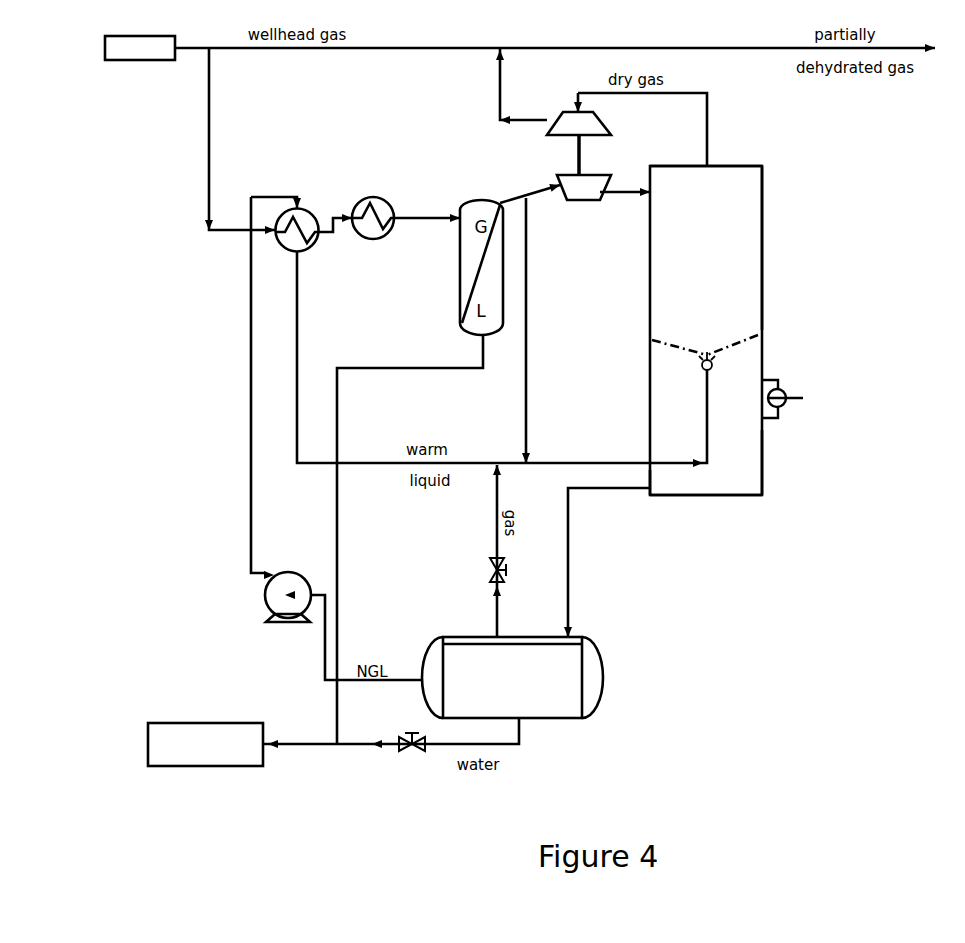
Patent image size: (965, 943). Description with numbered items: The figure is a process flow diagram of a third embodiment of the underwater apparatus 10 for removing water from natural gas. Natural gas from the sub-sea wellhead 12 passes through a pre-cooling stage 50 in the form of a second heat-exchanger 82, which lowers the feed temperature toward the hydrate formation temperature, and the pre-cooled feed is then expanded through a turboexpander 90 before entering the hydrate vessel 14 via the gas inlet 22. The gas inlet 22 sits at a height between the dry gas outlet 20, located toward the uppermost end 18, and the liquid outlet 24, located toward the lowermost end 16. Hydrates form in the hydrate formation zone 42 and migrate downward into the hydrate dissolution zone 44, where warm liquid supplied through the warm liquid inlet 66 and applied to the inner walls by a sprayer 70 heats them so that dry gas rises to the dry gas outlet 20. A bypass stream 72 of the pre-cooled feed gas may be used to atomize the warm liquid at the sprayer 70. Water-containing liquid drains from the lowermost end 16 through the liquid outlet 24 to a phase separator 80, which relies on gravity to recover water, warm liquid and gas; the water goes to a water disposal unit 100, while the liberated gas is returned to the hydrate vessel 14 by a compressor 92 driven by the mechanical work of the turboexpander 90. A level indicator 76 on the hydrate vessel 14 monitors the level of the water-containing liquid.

The underwater apparatus 10 is at (902, 249).
The sub-sea wellhead 12 is at (145, 63).
The hydrate vessel 14 is at (762, 473).
The lowermost end 16 is at (743, 483).
The uppermost end 18 is at (737, 177).
The dry gas outlet 20 is at (712, 162).
The gas inlet 22 is at (648, 195).
The liquid outlet 24 is at (645, 492).
The hydrate formation zone 42 is at (743, 188).
The hydrate dissolution zone 44 is at (725, 316).
The pre-cooling stage 50 is at (307, 210).
The warm liquid inlet 66 is at (648, 467).
The sprayer 70 is at (717, 365).
The bypass stream 72 is at (530, 353).
The level indicator 76 is at (801, 399).
The phase separator 80 is at (603, 679).
The second heat-exchanger 82 is at (367, 197).
The turboexpander 90 is at (593, 175).
The compressor 92 is at (602, 120).
The water disposal unit 100 is at (203, 768).